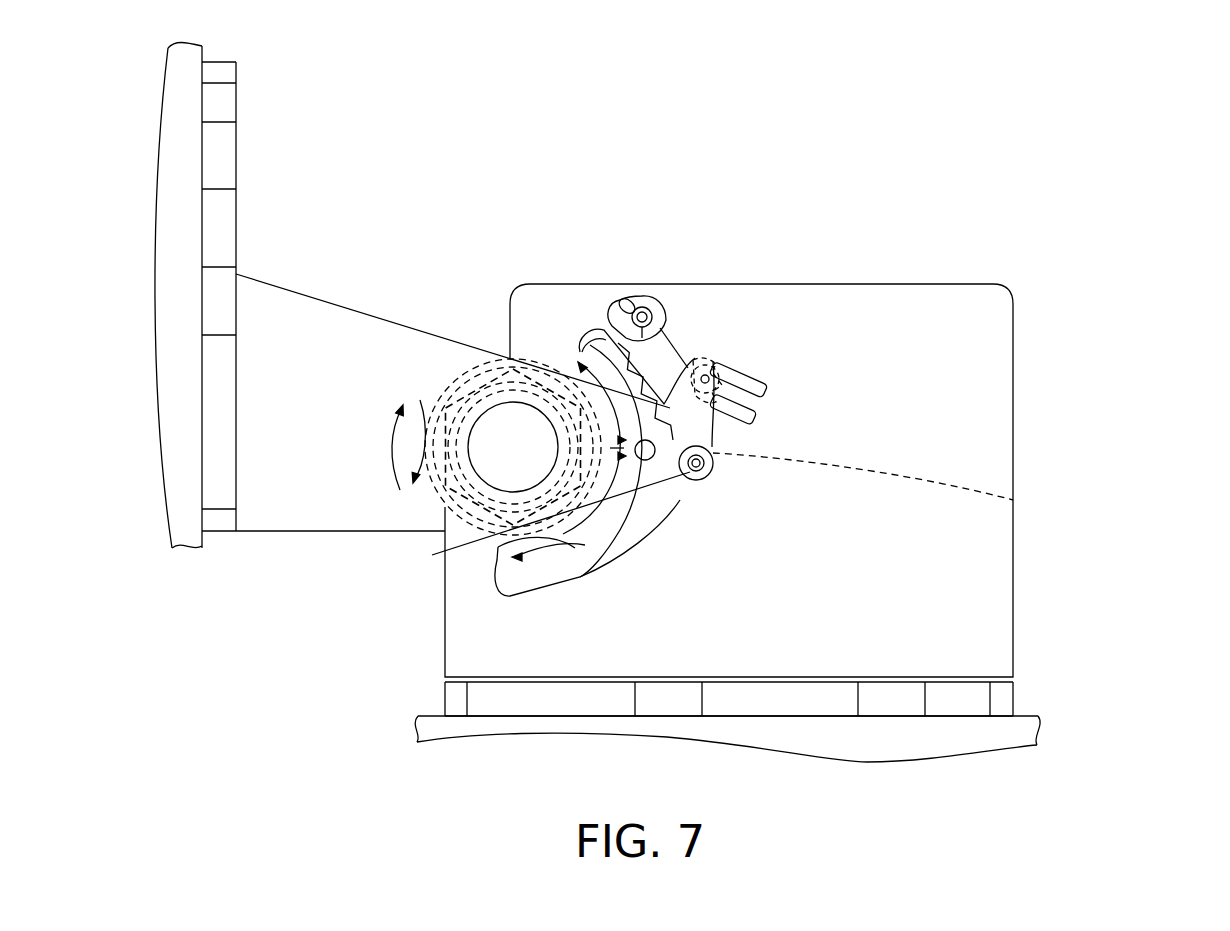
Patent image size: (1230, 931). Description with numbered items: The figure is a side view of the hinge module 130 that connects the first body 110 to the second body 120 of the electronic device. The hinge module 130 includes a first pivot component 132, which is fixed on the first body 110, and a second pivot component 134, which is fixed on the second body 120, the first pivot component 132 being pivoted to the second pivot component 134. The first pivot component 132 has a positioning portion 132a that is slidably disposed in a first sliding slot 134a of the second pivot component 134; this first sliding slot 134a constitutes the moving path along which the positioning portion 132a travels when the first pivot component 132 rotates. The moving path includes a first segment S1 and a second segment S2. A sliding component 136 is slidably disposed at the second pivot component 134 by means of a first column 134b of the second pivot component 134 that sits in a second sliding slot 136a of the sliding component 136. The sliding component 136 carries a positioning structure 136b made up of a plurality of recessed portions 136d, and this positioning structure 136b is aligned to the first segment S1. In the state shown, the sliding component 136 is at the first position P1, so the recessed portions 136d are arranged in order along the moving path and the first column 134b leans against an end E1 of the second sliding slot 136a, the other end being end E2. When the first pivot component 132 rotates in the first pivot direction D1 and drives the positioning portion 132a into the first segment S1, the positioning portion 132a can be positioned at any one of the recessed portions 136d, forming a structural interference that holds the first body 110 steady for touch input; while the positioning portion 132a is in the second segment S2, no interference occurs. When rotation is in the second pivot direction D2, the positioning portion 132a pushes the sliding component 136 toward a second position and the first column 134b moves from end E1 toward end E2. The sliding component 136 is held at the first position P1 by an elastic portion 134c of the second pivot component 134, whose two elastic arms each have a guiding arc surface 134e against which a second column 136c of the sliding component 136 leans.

The first body 110 is at (173, 222).
The second body 120 is at (1015, 733).
The hinge module 130 is at (1127, 123).
The first pivot component 132 is at (329, 312).
The positioning portion 132a is at (643, 462).
The second pivot component 134 is at (993, 332).
The first sliding slot 134a is at (577, 552).
The first column 134b is at (693, 480).
The elastic portion 134c is at (934, 418).
The guiding arc surface 134e is at (925, 361).
The sliding component 136 is at (675, 345).
The second sliding slot 136a is at (1013, 500).
The positioning structure 136b is at (598, 347).
The second column 136c is at (720, 355).
The recessed portion 136d is at (630, 350).
The first segment S1 is at (560, 372).
The second segment S2 is at (503, 537).
The first pivot direction D1 is at (420, 405).
The second pivot direction D2 is at (398, 427).
The first position P1 is at (686, 516).
The end of the second sliding slot E1 is at (718, 478).
The another end of the second sliding slot E2 is at (700, 355).